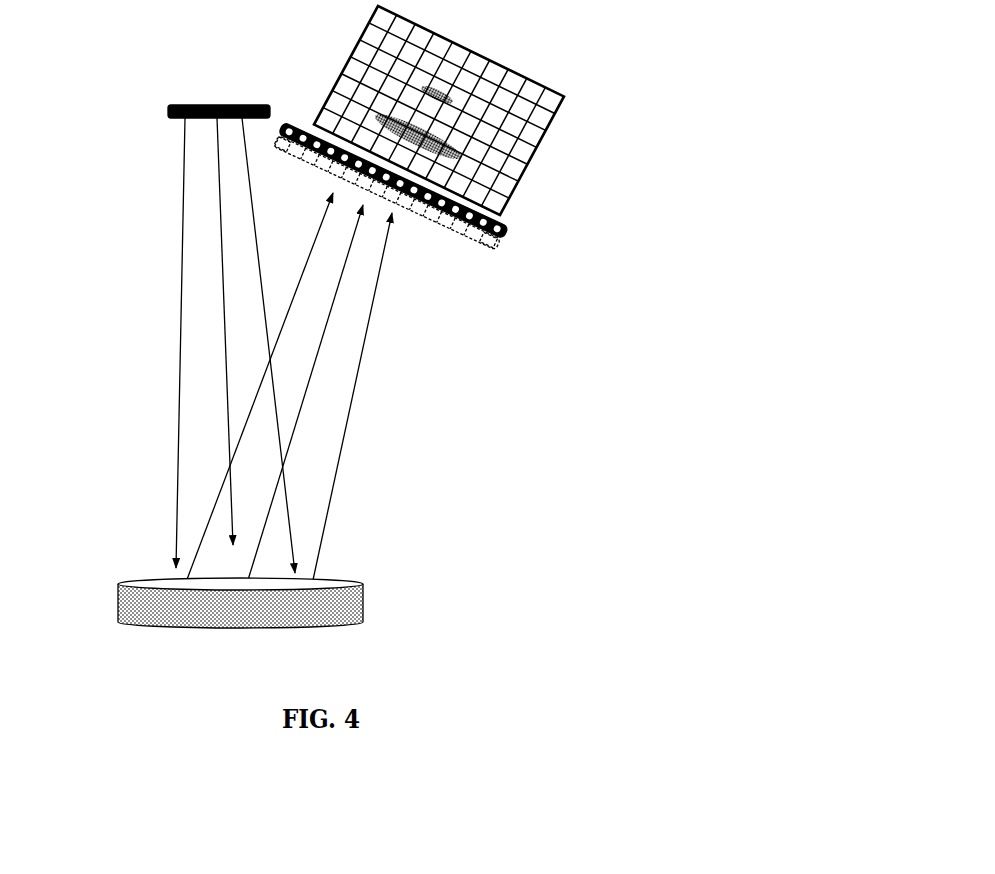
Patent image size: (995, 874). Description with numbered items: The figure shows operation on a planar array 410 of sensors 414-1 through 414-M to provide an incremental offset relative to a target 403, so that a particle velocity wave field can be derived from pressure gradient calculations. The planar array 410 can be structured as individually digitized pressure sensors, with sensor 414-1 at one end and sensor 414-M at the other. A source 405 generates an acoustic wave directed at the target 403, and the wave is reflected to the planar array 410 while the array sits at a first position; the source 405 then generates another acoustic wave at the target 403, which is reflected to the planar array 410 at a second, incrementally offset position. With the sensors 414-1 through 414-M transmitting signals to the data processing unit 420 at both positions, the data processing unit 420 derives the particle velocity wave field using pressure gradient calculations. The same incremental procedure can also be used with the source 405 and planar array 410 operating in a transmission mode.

The source 405 is at (137, 138).
The data processing unit 420 is at (570, 117).
The planar array 410 is at (503, 236).
The sensor 414-1 is at (295, 147).
The sensor 414-M is at (477, 246).
The target 403 is at (353, 563).